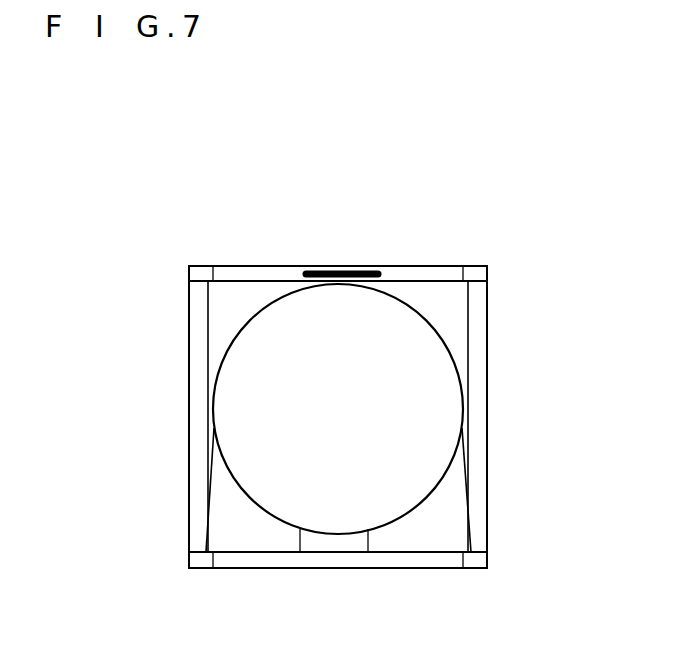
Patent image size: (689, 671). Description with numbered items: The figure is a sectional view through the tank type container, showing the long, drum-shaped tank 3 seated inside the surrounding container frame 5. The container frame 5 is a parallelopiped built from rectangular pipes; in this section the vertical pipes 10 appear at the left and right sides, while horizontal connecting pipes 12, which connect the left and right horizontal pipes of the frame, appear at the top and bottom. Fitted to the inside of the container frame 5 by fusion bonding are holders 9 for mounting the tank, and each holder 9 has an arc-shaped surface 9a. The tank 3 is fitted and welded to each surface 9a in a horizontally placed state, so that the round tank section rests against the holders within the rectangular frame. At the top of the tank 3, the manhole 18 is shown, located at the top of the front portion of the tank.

The tank 3 is at (440, 335).
The container frame 5 is at (244, 267).
The holder 9 is at (229, 516).
The arc-shaped surface 9a is at (254, 509).
The vertical pipe 10 is at (197, 371).
The horizontal connecting pipe 12 is at (432, 266).
The manhole 18 is at (340, 267).